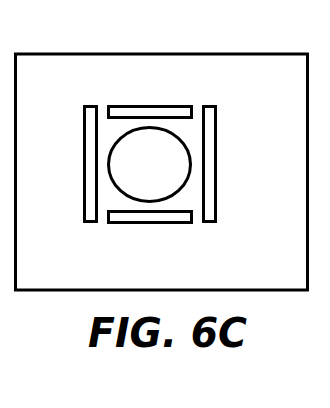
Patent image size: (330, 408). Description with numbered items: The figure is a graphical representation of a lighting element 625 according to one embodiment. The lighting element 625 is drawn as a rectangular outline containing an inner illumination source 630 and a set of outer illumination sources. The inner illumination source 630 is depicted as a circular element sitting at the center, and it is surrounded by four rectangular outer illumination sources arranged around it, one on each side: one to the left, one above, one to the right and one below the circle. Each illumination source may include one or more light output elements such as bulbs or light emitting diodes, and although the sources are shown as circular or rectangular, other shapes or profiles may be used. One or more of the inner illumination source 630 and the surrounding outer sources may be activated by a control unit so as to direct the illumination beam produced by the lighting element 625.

The lighting element 625 is at (206, 58).
The inner illumination source 630 is at (140, 175).